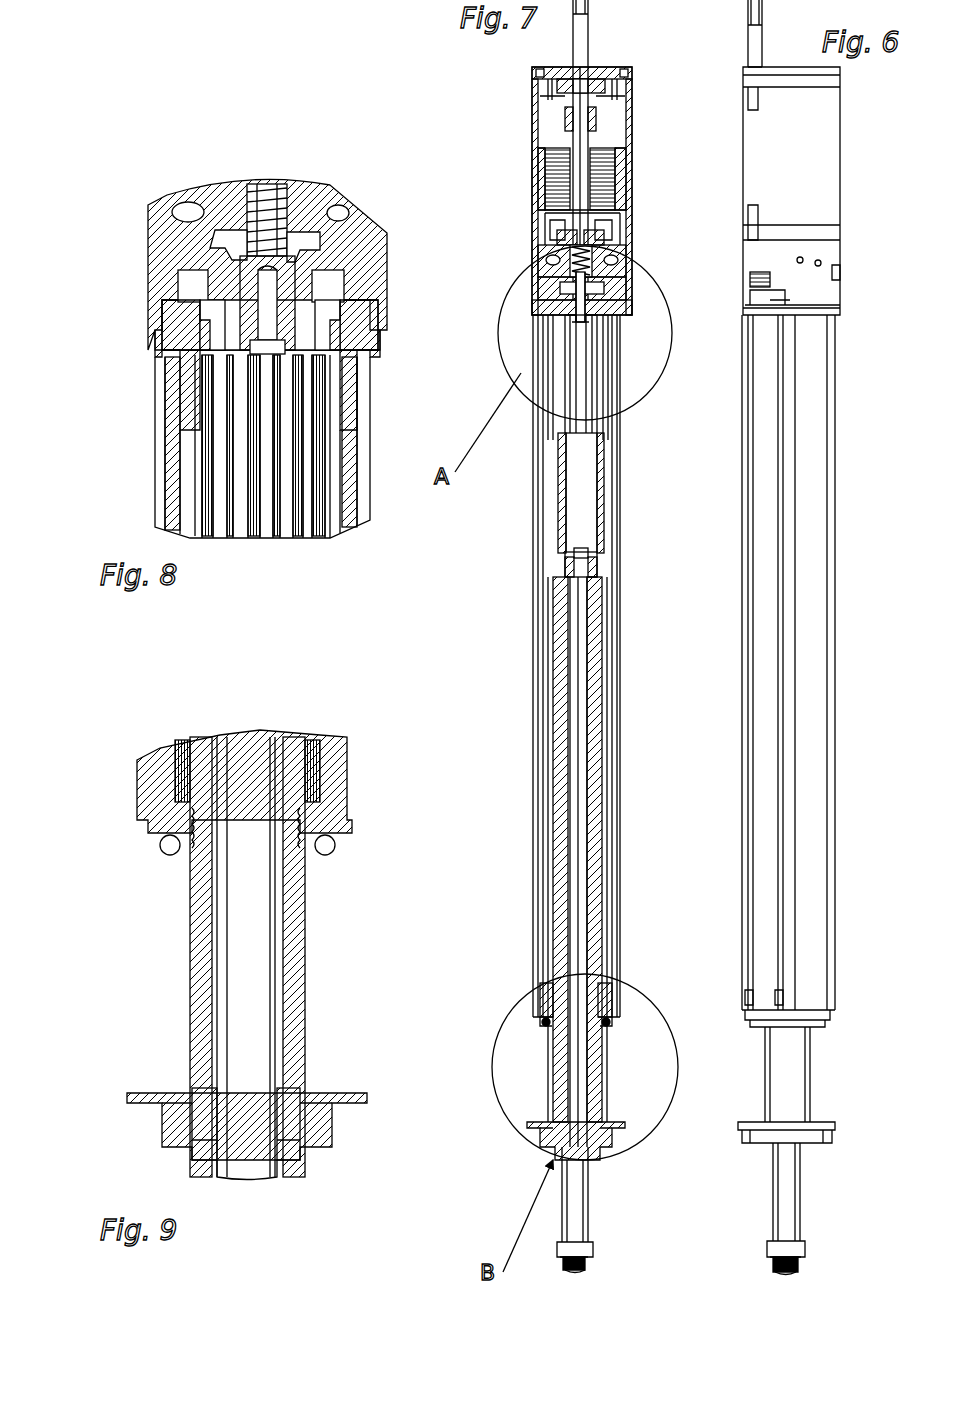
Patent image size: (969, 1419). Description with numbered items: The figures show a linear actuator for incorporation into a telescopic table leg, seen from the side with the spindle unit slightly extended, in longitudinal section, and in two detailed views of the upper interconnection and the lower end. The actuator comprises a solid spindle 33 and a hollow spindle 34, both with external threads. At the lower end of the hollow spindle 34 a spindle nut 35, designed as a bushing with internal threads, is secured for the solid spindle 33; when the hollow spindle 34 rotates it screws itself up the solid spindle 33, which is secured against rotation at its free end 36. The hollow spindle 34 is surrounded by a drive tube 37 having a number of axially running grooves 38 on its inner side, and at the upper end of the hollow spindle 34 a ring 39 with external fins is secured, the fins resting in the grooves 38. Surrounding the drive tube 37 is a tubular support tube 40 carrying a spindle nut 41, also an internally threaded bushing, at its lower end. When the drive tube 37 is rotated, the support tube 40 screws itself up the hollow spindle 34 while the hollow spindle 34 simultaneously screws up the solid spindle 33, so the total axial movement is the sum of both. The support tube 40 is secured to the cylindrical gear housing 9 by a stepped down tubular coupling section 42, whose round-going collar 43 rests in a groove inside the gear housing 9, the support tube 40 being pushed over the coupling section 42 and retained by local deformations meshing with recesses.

In FIG. 8, the gear housing 9 is at (155, 238).
In FIG. 8, the round-going collar 43 is at (158, 305).
In FIG. 8, the tubular coupling section 42 is at (178, 372).
In FIG. 9, the tubular support tube 40 is at (140, 795).
In FIG. 7, the tubular support tube 40 is at (742, 685).
In FIG. 6, the tubular support tube 40 is at (788, 671).
In FIG. 9, the spindle nut 41 is at (153, 827).
In FIG. 7, the spindle nut 41 is at (540, 1013).
In FIG. 9, the hollow spindle 34 is at (295, 927).
In FIG. 7, the hollow spindle 34 is at (603, 1057).
In FIG. 6, the hollow spindle 34 is at (765, 1085).
In FIG. 9, the spindle nut 35 is at (198, 1137).
In FIG. 7, the spindle nut 35 is at (555, 1145).
In FIG. 9, the solid spindle 33 is at (255, 1175).
In FIG. 7, the solid spindle 33 is at (773, 1178).
In FIG. 6, the solid spindle 33 is at (786, 1200).
In FIG. 7, the free end 36 is at (773, 1265).
In FIG. 6, the free end 36 is at (785, 1266).
In FIG. 7, the drive tube 37 is at (606, 797).
In FIG. 7, the axially running grooves 38 is at (592, 390).
In FIG. 7, the ring 39 is at (603, 452).